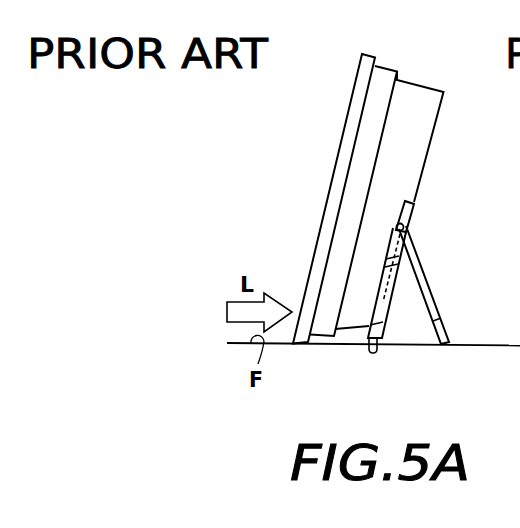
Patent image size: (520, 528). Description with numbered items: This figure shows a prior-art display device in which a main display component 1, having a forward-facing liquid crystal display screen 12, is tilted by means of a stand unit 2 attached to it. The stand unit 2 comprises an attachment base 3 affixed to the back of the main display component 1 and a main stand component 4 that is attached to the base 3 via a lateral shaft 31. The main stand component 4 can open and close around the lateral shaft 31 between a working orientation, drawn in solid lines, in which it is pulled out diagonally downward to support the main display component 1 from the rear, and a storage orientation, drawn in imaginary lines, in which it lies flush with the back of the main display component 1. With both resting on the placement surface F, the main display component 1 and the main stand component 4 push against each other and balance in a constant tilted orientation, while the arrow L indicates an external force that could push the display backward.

The main display component 1 is at (387, 64).
The display screen 12 is at (342, 137).
The stand unit 2 is at (380, 270).
The attachment base 3 is at (416, 215).
The lateral shaft 31 is at (395, 227).
The main stand component 4 is at (425, 285).